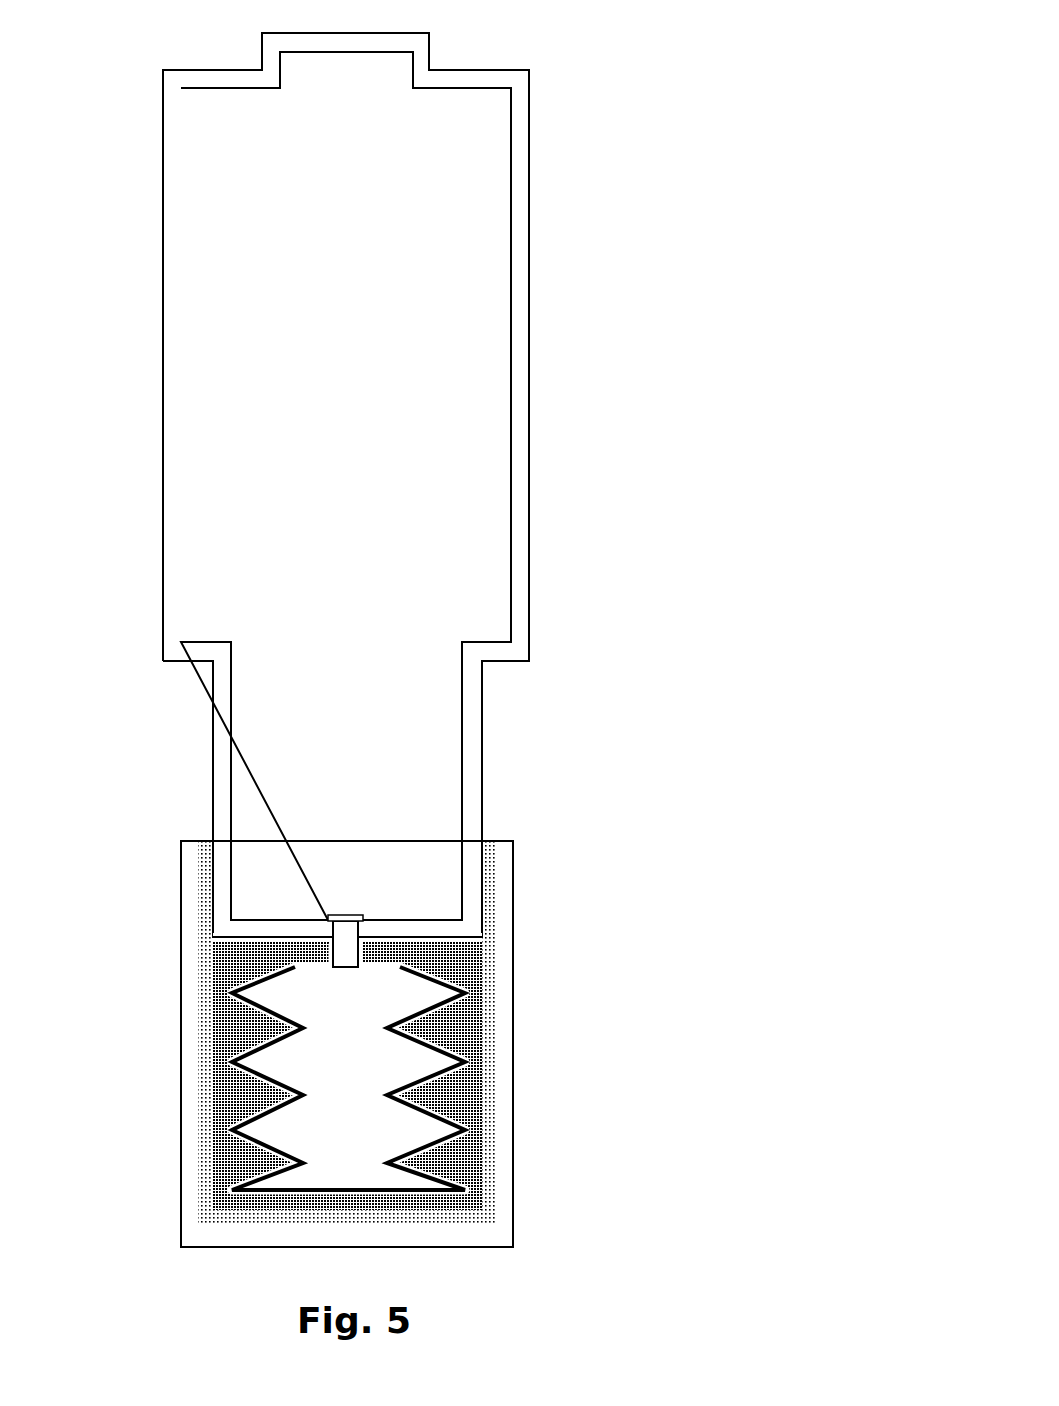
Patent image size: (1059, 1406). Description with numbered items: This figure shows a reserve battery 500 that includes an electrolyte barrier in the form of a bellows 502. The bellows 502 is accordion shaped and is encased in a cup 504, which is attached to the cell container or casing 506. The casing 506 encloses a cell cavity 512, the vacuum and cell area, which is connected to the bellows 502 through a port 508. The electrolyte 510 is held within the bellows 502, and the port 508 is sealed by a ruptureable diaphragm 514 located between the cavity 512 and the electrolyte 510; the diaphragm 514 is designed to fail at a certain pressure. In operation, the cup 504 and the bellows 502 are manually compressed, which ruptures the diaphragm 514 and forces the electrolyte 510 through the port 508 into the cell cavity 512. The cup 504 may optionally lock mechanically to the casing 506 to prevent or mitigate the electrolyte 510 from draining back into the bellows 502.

The battery 500 is at (606, 62).
The bellows 502 is at (507, 1018).
The cup 504 is at (503, 1165).
The casing 506 is at (529, 589).
The port 508 is at (349, 898).
The electrolyte 510 is at (302, 1118).
The cavity 512 is at (322, 442).
The ruptureable diaphragm 514 is at (363, 921).